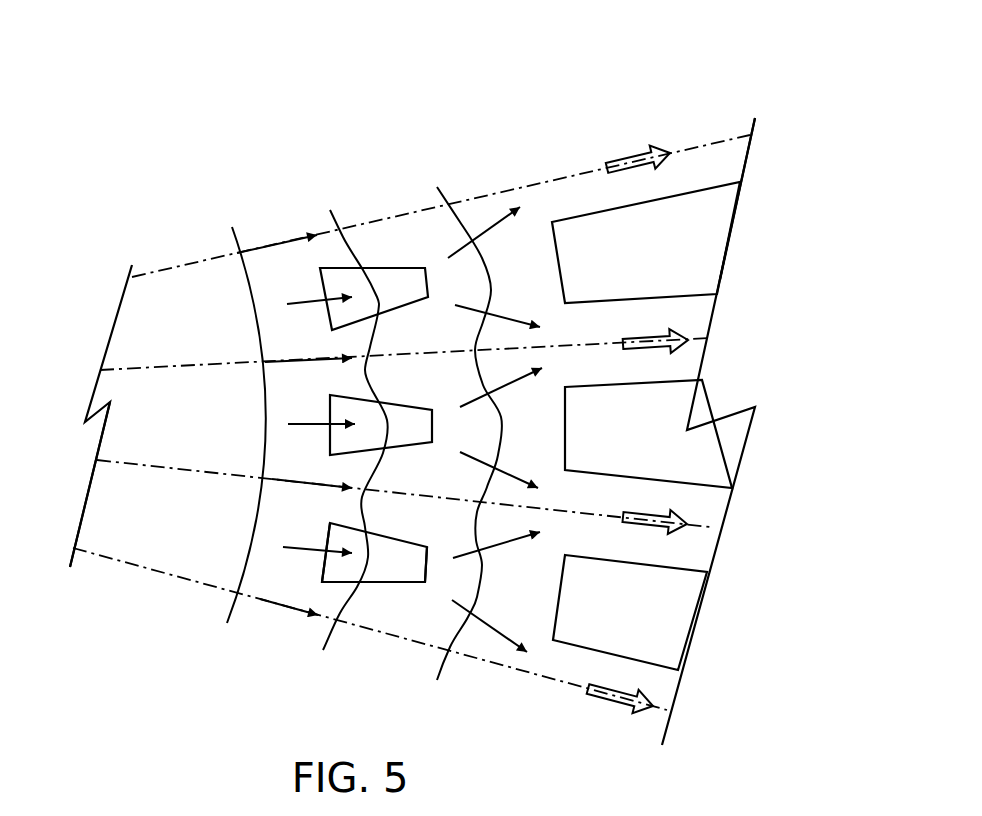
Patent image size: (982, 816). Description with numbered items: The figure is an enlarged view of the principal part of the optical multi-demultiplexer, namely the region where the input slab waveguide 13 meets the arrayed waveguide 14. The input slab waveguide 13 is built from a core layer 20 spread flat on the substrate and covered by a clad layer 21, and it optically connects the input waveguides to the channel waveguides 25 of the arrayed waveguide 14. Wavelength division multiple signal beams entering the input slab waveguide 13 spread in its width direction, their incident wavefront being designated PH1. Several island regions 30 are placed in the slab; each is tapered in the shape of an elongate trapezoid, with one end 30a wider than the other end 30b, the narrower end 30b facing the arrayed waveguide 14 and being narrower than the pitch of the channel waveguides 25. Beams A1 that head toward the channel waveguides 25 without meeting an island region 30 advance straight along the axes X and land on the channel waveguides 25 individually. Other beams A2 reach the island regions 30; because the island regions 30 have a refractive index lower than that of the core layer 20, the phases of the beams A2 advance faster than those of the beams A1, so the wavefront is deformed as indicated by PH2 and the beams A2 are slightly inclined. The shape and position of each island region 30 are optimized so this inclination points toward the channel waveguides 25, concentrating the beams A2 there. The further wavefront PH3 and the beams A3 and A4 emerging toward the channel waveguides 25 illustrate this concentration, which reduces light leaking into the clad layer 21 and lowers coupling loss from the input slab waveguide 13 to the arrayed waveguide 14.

The input slab waveguide 13 is at (150, 248).
The arrayed waveguide 14 is at (820, 138).
The core layer 20 is at (100, 548).
The clad layer 21 is at (718, 246).
The channel waveguides 25 is at (730, 160).
The island region 30 is at (397, 266).
The one end of island region 30a is at (320, 567).
The other end of island region 30b is at (428, 582).
The axis X is at (195, 260).
The beams A1 is at (272, 243).
The beams A2 is at (303, 300).
The outlet flow A3 is at (645, 333).
The outlet flow (top) A4 is at (628, 157).
The wavefront of incident signal beams PH1 is at (258, 313).
The deformed wavefront PH2 is at (357, 262).
The phase boundary 3 PH3 is at (462, 205).